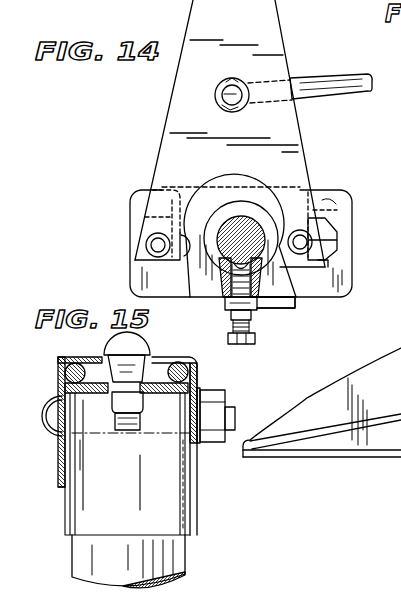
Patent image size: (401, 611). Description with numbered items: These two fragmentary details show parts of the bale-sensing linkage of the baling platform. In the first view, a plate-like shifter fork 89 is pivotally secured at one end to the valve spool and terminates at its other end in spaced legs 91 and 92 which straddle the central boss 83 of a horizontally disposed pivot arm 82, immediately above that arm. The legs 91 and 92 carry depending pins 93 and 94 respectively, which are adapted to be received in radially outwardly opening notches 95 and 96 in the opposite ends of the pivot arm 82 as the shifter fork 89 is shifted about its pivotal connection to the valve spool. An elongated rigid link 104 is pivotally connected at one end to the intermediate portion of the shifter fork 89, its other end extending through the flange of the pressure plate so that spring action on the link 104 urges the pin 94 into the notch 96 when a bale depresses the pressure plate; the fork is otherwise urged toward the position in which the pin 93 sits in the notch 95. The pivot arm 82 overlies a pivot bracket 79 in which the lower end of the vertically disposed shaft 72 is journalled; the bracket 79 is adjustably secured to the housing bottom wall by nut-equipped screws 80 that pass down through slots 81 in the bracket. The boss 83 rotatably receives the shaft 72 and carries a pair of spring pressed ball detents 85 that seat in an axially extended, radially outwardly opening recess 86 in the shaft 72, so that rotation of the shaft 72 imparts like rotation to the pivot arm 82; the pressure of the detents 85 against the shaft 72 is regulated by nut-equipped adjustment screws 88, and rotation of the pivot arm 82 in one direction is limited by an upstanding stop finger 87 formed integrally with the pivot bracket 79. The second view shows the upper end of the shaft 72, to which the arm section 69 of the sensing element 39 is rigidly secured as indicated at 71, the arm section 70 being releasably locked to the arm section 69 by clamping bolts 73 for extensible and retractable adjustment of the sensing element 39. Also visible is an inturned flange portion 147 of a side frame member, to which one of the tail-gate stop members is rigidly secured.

In FIG. 14, the shifter fork 89 is at (271, 52).
In FIG. 14, the rigid link 104 is at (343, 82).
In FIG. 14, the pivot bracket 79 is at (135, 280).
In FIG. 14, the leg 92 is at (160, 214).
In FIG. 14, the pin 94 is at (150, 246).
In FIG. 14, the notch 96 is at (180, 257).
In FIG. 14, the boss 83 is at (262, 220).
In FIG. 14, the ball detents 85 is at (218, 270).
In FIG. 14, the recess 86 is at (223, 243).
In FIG. 14, the shaft 72 is at (240, 224).
In FIG. 15, the shaft 72 is at (172, 555).
In FIG. 14, the adjustment screws 88 is at (240, 345).
In FIG. 14, the pivot arm 82 is at (203, 290).
In FIG. 14, the stop finger 87 is at (289, 310).
In FIG. 14, the leg 91 is at (312, 210).
In FIG. 14, the notch 95 is at (346, 208).
In FIG. 14, the nut-equipped screws 80 is at (338, 240).
In FIG. 14, the pin 93 is at (312, 246).
In FIG. 14, the slots 81 is at (330, 265).
In FIG. 15, the sensing element 39 is at (200, 475).
In FIG. 15, the arm section 70 is at (60, 376).
In FIG. 15, the clamping bolts 73 is at (133, 345).
In FIG. 15, the arm section 69 is at (190, 355).
In FIG. 15, the securing connection 71 is at (236, 421).
In FIG. 15, the inturned flange portions 147 is at (398, 458).